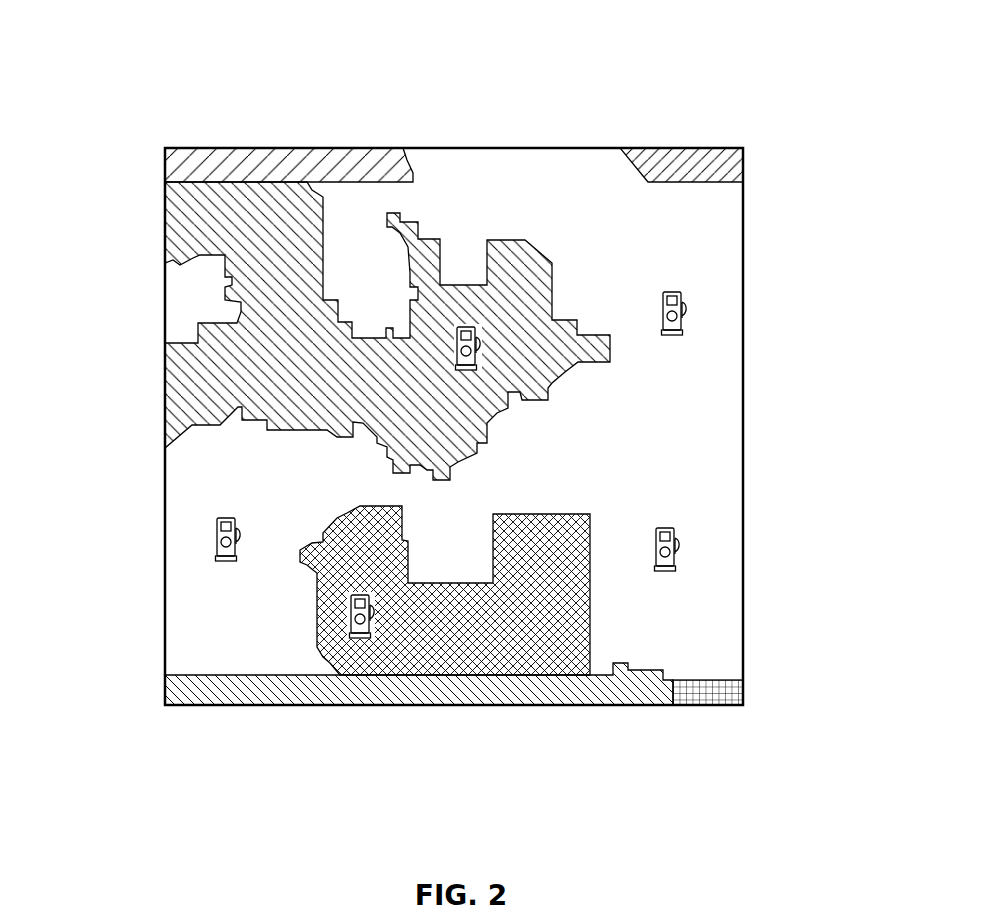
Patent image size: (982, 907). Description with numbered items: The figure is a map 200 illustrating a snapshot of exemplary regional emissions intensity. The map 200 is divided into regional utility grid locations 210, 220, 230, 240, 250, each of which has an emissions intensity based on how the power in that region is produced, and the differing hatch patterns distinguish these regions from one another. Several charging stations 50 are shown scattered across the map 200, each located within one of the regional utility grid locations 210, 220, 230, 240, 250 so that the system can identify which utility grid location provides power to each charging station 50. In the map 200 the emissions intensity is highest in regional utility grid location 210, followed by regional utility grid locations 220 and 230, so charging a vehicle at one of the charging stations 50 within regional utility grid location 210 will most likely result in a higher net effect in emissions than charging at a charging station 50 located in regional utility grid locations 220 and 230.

The map 200 is at (629, 93).
The regional utility grid location 210 is at (487, 173).
The regional utility grid location 220 is at (461, 650).
The regional utility grid location 230 is at (204, 386).
The regional utility grid location 240 is at (559, 685).
The regional utility grid location 250 is at (272, 165).
The charging station 50 is at (463, 322).